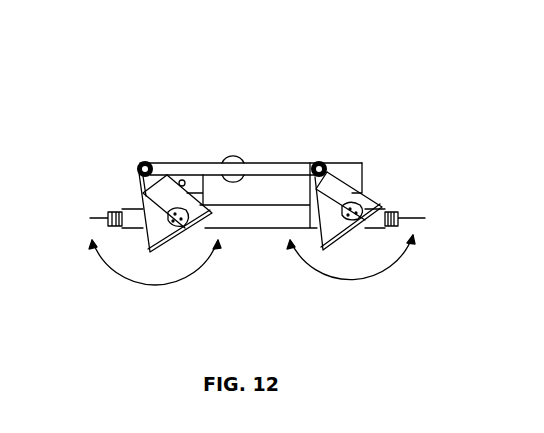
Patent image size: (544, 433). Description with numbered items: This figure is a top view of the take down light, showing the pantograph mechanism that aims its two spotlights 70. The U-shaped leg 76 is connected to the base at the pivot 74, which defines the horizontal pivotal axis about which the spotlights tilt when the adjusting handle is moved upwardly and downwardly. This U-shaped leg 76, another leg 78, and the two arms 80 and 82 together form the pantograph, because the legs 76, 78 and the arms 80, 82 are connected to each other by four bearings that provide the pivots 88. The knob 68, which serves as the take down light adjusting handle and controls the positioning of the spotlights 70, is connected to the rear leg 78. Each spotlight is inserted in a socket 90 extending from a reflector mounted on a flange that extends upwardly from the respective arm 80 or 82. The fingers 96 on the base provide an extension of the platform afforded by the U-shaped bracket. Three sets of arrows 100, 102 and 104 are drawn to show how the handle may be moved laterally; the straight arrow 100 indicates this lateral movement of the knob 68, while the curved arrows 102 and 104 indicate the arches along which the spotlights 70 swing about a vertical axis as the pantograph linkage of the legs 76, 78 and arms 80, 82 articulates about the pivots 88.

The arrows 100 is at (365, 53).
The knob 68 is at (228, 159).
The leg 78 is at (268, 162).
The pivots 88 is at (190, 218).
The sockets 90 is at (138, 190).
The fingers 96 is at (353, 170).
The arm 80 is at (363, 200).
The spotlights 70 is at (139, 254).
The pivot 74 is at (108, 218).
The arm 82 is at (110, 273).
The arrow 102 is at (175, 283).
The U-shaped leg 76 is at (248, 215).
The arrow 104 is at (373, 278).